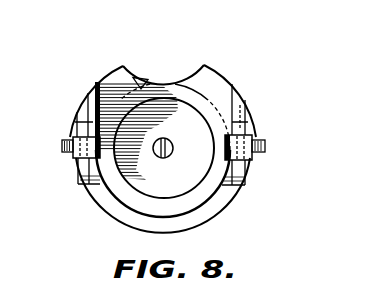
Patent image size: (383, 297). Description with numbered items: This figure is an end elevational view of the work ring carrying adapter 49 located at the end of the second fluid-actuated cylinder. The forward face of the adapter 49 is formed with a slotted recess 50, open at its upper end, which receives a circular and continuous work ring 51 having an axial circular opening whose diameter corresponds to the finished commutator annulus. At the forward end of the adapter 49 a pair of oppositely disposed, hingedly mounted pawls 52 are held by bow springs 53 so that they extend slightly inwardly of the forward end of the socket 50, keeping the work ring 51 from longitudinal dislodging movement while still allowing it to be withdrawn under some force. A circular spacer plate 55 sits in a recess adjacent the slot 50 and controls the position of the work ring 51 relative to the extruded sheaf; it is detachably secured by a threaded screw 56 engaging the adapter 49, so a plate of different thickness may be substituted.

The adapter 49 is at (214, 70).
The slotted recess 50 is at (101, 90).
The work ring 51 is at (140, 75).
The pawls 52 is at (75, 157).
The bow springs 53 is at (62, 143).
The spacer plate 55 is at (155, 115).
The threaded screw 56 is at (170, 141).